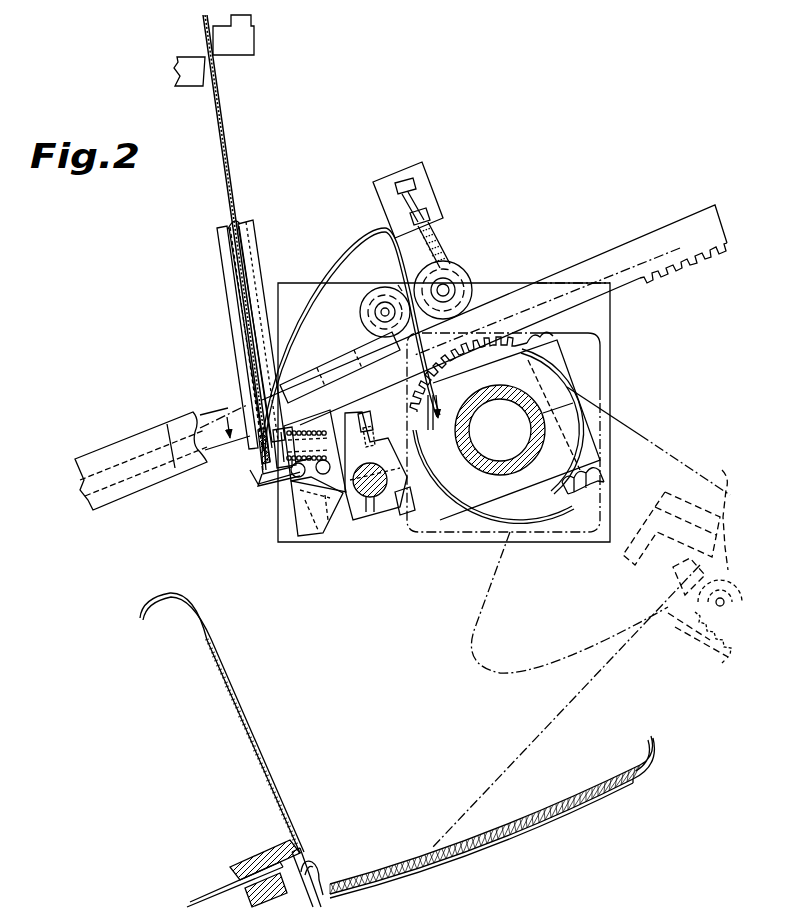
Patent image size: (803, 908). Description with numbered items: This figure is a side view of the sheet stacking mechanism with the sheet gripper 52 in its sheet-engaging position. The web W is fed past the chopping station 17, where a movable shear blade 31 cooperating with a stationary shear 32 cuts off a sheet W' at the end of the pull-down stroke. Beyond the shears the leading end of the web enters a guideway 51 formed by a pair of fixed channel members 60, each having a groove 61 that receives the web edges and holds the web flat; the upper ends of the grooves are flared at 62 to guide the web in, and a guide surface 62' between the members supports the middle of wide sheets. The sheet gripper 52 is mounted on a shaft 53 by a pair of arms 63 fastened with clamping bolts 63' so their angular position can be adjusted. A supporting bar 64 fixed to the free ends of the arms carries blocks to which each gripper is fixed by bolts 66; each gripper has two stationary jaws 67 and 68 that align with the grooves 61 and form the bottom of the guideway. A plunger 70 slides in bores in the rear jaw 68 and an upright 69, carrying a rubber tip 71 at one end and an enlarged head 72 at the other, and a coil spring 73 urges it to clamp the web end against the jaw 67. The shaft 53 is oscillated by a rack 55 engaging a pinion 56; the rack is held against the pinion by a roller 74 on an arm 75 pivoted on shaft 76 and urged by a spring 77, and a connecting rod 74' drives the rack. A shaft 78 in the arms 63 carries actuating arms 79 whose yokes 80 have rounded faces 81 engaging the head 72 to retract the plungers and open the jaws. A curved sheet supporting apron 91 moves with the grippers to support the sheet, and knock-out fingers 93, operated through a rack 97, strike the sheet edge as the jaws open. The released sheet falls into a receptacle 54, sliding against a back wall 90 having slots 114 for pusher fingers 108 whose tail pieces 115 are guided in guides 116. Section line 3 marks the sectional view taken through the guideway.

The chopping station 17 is at (248, 70).
The stationary shear 32 is at (248, 40).
The movable shear blade 31 is at (191, 77).
The web W is at (237, 238).
The guideway 51 is at (224, 310).
The fixed channel member 60 is at (221, 300).
The groove 61 is at (247, 300).
The flared upper end of grooves 62 is at (263, 200).
The guide surface 62' is at (207, 337).
The rack 55 is at (637, 240).
The connecting rod 74' is at (162, 436).
The section line 3 is at (333, 429).
The arm 63 is at (444, 436).
The clamping bolt 63' is at (535, 432).
The spring 77 is at (447, 238).
The shaft 76 is at (384, 312).
The arm 75 is at (408, 290).
The roller 74 is at (472, 268).
The curved sheet supporting apron 91 is at (331, 263).
The coil spring 73 is at (304, 431).
The supporting bar 64 is at (344, 469).
The upright 69 is at (327, 432).
The rubber tip 71 is at (264, 452).
The stationary jaw 67 is at (262, 466).
The stationary jaw 68 is at (268, 470).
The plunger 70 is at (289, 470).
The bolt 66 is at (294, 480).
The enlarged head 72 is at (405, 494).
The shaft 78 is at (370, 497).
The actuating arm 79 is at (395, 488).
The yoke 80 is at (362, 419).
The rounded face 81 is at (368, 440).
The pinion 56 is at (505, 460).
The shaft 53 is at (527, 446).
The sheet gripper 52 is at (666, 571).
The knock-out finger 93 is at (675, 511).
The rack 97 is at (707, 637).
The back wall 90 is at (241, 716).
The guide 116 is at (256, 856).
The tail piece 115 is at (218, 896).
The slot 114 is at (312, 866).
The finger 108 is at (322, 888).
The receptacle 54 is at (496, 806).
The sheet W' is at (646, 746).